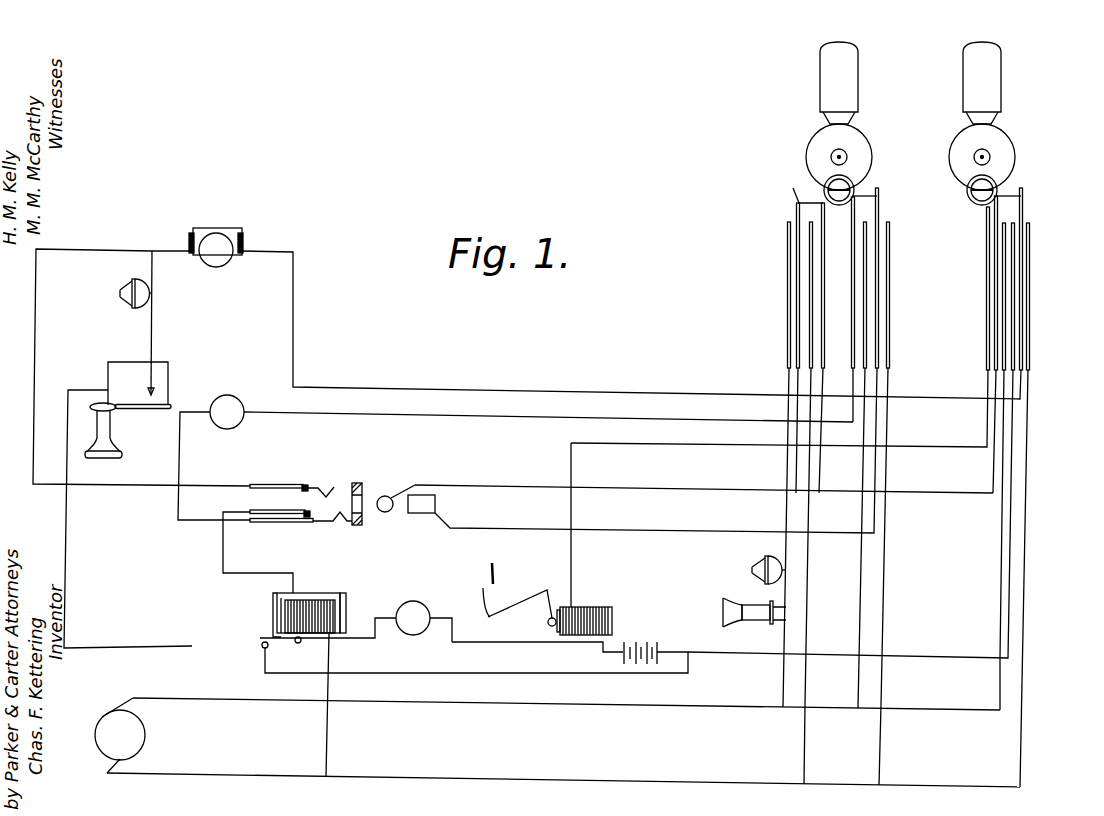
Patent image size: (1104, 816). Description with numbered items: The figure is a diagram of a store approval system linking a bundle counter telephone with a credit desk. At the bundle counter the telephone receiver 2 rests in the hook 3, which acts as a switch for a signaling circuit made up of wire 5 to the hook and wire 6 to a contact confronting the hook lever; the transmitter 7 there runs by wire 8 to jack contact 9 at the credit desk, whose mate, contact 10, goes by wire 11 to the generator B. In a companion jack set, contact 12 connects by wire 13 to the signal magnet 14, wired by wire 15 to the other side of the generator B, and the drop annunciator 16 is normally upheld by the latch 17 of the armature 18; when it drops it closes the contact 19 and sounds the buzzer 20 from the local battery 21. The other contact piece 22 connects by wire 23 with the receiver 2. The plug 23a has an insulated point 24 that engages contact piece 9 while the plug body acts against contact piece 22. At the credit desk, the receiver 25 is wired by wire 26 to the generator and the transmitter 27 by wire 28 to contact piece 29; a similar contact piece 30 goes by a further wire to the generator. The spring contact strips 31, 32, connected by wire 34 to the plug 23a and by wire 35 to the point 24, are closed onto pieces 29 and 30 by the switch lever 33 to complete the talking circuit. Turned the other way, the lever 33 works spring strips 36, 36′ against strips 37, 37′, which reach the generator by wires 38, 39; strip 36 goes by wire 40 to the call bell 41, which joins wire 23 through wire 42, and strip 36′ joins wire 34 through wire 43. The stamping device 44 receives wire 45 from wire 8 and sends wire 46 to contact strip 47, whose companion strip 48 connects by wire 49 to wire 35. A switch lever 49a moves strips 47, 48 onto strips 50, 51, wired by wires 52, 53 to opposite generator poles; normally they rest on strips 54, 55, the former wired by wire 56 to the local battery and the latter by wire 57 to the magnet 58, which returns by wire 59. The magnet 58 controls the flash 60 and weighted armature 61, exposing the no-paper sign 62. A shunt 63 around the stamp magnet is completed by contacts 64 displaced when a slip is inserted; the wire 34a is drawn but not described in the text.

The telephone receiver 2 is at (106, 458).
The hook 3 is at (145, 409).
The wire 5 is at (168, 390).
The wire 6 is at (152, 343).
The transmitter 7 is at (127, 304).
The wire 8 is at (35, 369).
The jack contact 9 is at (303, 484).
The jack contact 10 is at (264, 484).
The wire 11 is at (221, 258).
The jack contact 12 is at (279, 514).
The wire 13 is at (226, 561).
The signal magnet 14 is at (273, 600).
The wire 15 is at (172, 254).
The drop annunciator 16 is at (273, 615).
The latch 17 is at (315, 596).
The armature 18 is at (347, 615).
The contact 19 is at (262, 645).
The buzzer 20 is at (413, 635).
The local battery 21 is at (655, 641).
The contact piece 22 is at (321, 523).
The wire 23 is at (193, 528).
The plug 23a is at (433, 514).
The plug point 24 is at (385, 496).
The telephone receiver 25 is at (752, 625).
The wire 26 is at (758, 705).
The transmitter 27 is at (752, 570).
The wire 28 is at (787, 378).
The contact piece 29 is at (787, 333).
The contact piece 30 is at (810, 268).
The spring contact strip 31 is at (796, 213).
The spring contact strip 32 is at (824, 190).
The switch lever 33 is at (828, 80).
The wire 34 is at (763, 533).
The wire 34a is at (804, 740).
The wire 35 is at (821, 474).
The spring contact strip 36 is at (857, 242).
The spring contact strip 36′ is at (880, 212).
The contact strip 37 is at (892, 297).
The contact strip 37′ is at (889, 273).
The wire 38 is at (859, 580).
The wire 39 is at (880, 755).
The wire 40 is at (722, 445).
The call bell 41 is at (128, 520).
The wire 42 is at (181, 449).
The wire 43 is at (888, 424).
The stamping device 44 is at (231, 398).
The wire 45 is at (328, 748).
The wire 46 is at (294, 333).
The spring contact strip 47 is at (1023, 362).
The spring contact strip 48 is at (988, 298).
The wire 49 is at (990, 495).
The switch lever 49a is at (992, 88).
The contact strip 50 is at (1030, 288).
The contact strip 51 is at (1015, 328).
The wire 52 is at (1023, 643).
The wire 53 is at (1000, 620).
The contact strip 54 is at (1006, 263).
The contact strip 55 is at (994, 258).
The wire 56 is at (1008, 570).
The wire 57 is at (571, 568).
The magnet 58 is at (601, 607).
The wire 59 is at (614, 634).
The flash 60 is at (483, 600).
The weighted armature 61 is at (548, 623).
The sign 62 is at (493, 565).
The shunt 63 is at (222, 228).
The contacts 64 is at (189, 240).
The generator B is at (147, 737).